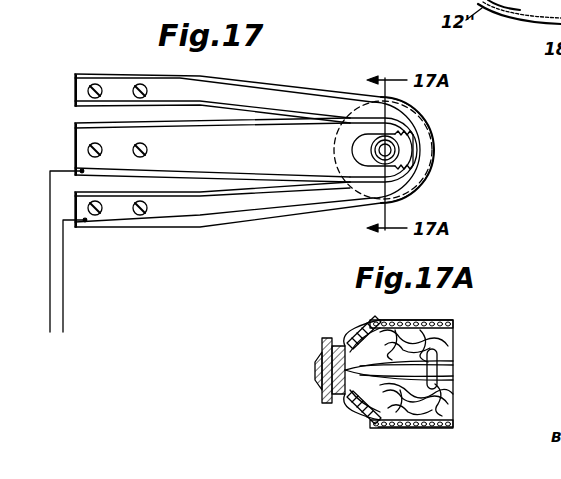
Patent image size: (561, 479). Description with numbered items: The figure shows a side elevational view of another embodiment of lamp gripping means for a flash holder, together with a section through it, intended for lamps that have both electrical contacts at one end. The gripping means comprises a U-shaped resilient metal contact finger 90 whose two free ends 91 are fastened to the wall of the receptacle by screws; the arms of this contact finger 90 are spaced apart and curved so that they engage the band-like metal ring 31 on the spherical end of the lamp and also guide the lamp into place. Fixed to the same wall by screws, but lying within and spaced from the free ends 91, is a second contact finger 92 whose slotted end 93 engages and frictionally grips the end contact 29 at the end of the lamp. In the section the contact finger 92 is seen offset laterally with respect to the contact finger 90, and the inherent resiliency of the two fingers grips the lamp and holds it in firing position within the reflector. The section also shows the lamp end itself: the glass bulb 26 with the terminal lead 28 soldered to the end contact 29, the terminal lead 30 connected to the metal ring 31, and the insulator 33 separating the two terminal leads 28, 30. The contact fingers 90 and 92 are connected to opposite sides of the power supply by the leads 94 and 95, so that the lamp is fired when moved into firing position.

In FIG. 17A, the glass bulb 26 is at (434, 322).
In FIG. 17A, the terminal lead 28 is at (412, 366).
In FIG. 17A, the end contact 29 is at (318, 374).
In FIG. 17A, the terminal lead 30 is at (440, 398).
In FIG. 17A, the metal ring 31 is at (376, 330).
In FIG. 17A, the insulator 33 is at (436, 356).
In FIG. 17, the U-shaped resilient metal contact finger 90 is at (436, 142).
In FIG. 17A, the U-shaped resilient metal contact finger 90 is at (362, 318).
In FIG. 17, the free ends 91 is at (110, 80).
In FIG. 17, the second contact finger 92 is at (258, 164).
In FIG. 17A, the second contact finger 92 is at (322, 346).
In FIG. 17, the slotted end 93 is at (408, 160).
In FIG. 17, the lead 94 is at (63, 305).
In FIG. 17, the lead 95 is at (50, 332).